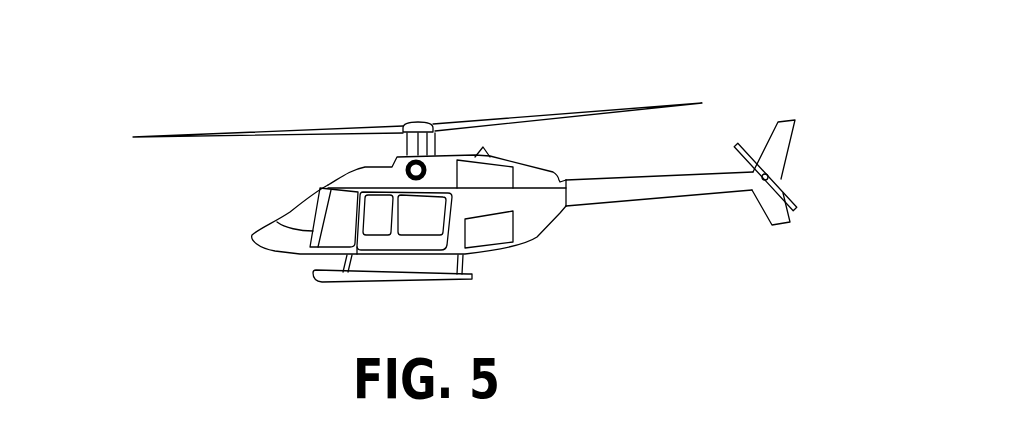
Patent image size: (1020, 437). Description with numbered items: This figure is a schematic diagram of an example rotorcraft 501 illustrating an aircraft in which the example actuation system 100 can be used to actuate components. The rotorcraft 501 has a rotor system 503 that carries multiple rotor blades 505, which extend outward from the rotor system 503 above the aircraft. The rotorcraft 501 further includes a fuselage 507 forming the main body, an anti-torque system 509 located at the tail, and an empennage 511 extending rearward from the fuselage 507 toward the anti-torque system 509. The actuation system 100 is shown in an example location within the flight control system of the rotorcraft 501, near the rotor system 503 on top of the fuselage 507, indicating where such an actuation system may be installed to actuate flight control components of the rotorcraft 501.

The actuation system 100 is at (406, 165).
The rotorcraft 501 is at (249, 75).
The rotor system 503 is at (437, 93).
The rotor blades 505 is at (648, 108).
The fuselage 507 is at (303, 254).
The anti-torque system 509 is at (808, 238).
The empennage 511 is at (638, 203).